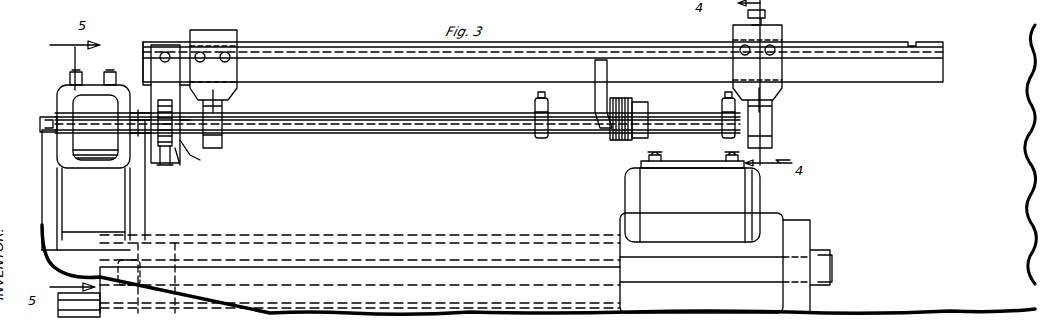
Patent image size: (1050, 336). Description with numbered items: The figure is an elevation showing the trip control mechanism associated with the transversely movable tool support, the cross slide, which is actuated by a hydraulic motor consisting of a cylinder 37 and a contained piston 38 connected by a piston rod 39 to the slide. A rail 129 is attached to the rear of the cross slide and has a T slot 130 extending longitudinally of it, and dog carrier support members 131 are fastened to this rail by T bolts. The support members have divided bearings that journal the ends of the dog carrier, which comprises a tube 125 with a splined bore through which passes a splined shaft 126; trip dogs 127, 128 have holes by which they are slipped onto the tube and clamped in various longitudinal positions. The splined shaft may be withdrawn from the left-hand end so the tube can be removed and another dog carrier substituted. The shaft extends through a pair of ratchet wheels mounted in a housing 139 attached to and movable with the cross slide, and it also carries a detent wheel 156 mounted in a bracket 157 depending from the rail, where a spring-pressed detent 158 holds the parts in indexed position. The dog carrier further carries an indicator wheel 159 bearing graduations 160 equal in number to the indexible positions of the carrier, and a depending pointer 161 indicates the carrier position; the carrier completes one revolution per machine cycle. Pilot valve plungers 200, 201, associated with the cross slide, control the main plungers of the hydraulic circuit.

The cylinder 37 is at (308, 243).
The piston 38 is at (168, 238).
The piston rod 39 is at (378, 260).
The tube 125 is at (418, 132).
The splined shaft 126 is at (186, 146).
The trip dog 127 is at (540, 138).
The trip dog 128 is at (722, 100).
The rail 129 is at (920, 68).
The T slot 130 is at (935, 52).
The dog carrier support member 131 is at (790, 70).
The housing 139 is at (72, 184).
The detent wheel 156 is at (177, 150).
The bracket 157 is at (173, 46).
The spring-pressed detent 158 is at (173, 166).
The indicator wheel 159 is at (639, 157).
The graduations 160 is at (630, 107).
The depending pointer 161 is at (600, 133).
The pilot valve plunger 200 is at (630, 167).
The pilot valve plunger 201 is at (720, 155).